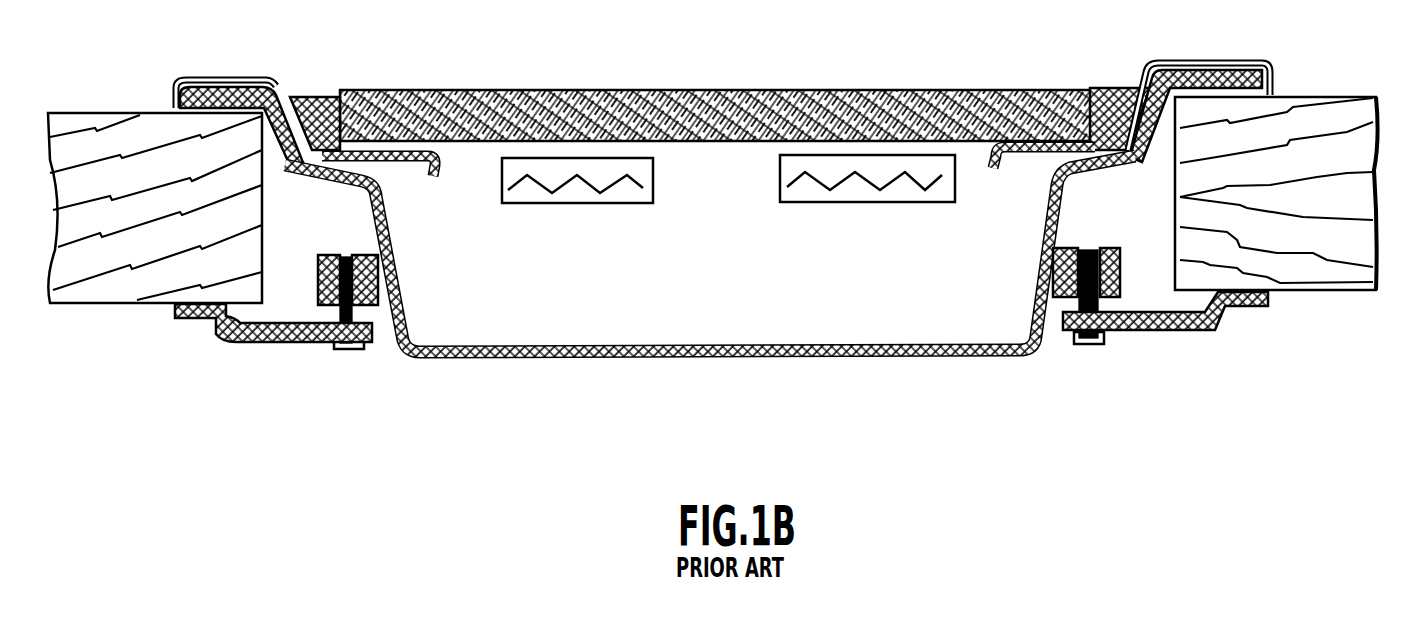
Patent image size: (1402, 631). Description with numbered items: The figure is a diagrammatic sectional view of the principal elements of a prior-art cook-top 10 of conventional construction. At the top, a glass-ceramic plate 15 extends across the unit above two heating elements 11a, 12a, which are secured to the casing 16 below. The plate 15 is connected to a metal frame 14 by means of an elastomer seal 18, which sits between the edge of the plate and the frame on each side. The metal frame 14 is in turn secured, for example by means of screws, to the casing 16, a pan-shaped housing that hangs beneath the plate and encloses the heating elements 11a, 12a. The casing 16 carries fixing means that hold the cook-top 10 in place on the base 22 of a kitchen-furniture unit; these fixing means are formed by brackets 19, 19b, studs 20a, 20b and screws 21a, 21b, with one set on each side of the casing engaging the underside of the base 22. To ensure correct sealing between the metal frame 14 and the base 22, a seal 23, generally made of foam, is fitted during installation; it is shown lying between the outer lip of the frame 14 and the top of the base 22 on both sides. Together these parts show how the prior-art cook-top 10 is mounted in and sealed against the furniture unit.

The cook-top 10 is at (709, 212).
The heating element 11a is at (560, 206).
The heating element 12a is at (822, 203).
The metal frame 14 is at (244, 84).
The glass-ceramic plate 15 is at (828, 90).
The casing 16 is at (675, 358).
The elastomer seal 18 is at (296, 100).
The mounting bracket 19 is at (200, 322).
The bracket 19b is at (1182, 332).
The stud 20a is at (320, 280).
The stud 20b is at (1118, 275).
The screw 21a is at (356, 350).
The screw 21b is at (1092, 345).
The base 22 is at (80, 305).
The seal 23 is at (192, 82).